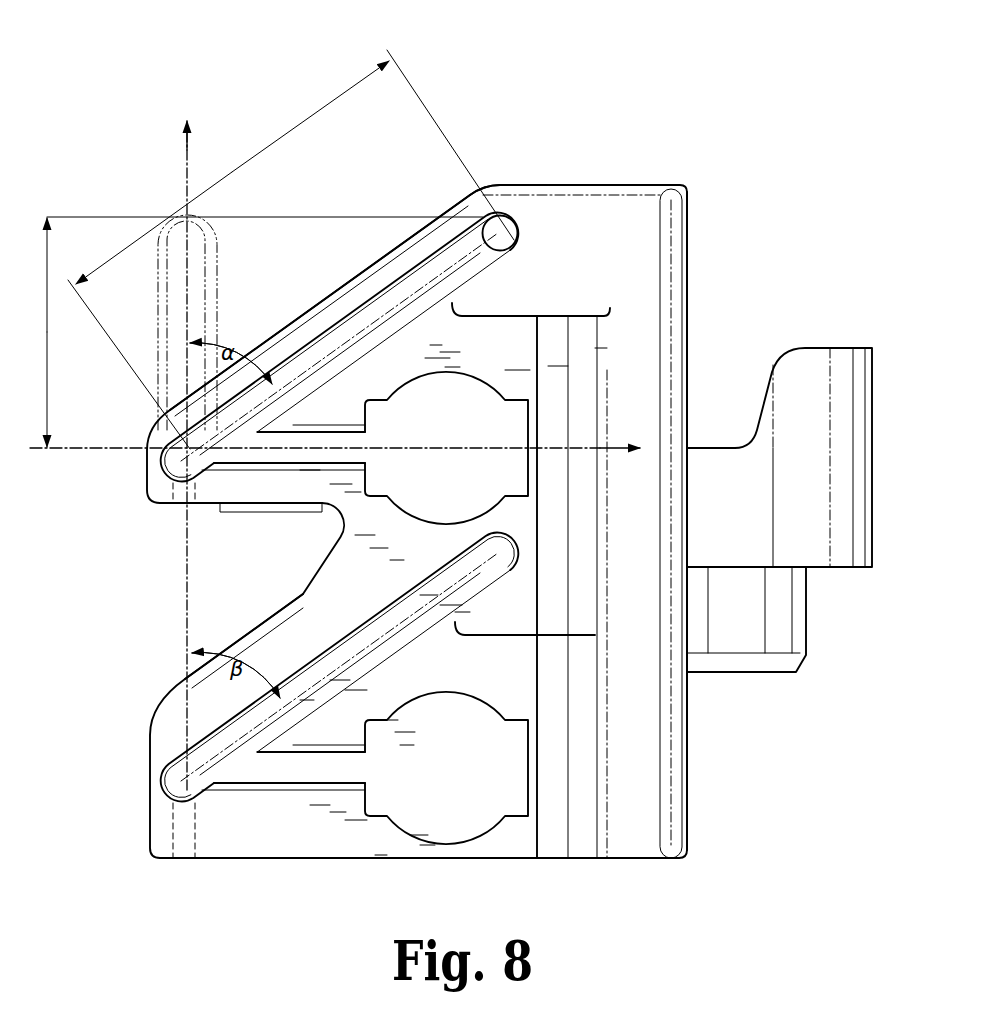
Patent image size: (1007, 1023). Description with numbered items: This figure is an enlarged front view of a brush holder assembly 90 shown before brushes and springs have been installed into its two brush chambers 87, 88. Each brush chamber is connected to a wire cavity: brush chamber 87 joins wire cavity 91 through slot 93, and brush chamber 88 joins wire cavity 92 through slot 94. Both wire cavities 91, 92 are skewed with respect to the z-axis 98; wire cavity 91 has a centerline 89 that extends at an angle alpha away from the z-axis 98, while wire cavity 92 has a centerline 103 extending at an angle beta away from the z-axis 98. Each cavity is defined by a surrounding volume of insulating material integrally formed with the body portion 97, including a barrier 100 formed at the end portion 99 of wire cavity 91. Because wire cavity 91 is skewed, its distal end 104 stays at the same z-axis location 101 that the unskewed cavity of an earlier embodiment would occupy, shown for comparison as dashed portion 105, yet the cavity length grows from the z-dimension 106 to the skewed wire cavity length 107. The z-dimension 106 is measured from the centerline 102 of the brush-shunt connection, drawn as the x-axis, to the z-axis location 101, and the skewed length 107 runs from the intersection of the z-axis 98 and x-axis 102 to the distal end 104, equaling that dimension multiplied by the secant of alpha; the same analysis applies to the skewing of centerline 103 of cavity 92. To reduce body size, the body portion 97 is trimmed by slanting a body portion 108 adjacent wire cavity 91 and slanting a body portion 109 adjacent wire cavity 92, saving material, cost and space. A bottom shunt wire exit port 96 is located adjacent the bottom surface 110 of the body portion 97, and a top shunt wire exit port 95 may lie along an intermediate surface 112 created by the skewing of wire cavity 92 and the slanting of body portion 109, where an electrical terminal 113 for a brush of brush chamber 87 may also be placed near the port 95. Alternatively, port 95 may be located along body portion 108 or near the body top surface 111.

The brush chamber 87 is at (446, 448).
The brush chamber 88 is at (446, 768).
The centerline 89 is at (528, 206).
The brush holder assembly 90 is at (722, 881).
The wire cavity 91 is at (467, 257).
The wire cavity 92 is at (472, 578).
The slot 93 is at (322, 456).
The slot 94 is at (307, 768).
The top shunt wire exit port 95 is at (168, 492).
The bottom shunt wire exit port 96 is at (168, 812).
The body portion 97 is at (660, 236).
The z-axis 98 is at (186, 158).
The end portion 99 is at (518, 232).
The barrier 100 is at (483, 213).
The z-axis location 101 is at (180, 227).
The centerline 102 is at (552, 448).
The centerline 103 is at (493, 550).
The distal end 104 is at (505, 236).
The dashed portion 105 is at (219, 248).
The z-dimension 106 is at (252, 332).
The skewed wire cavity length 107 is at (187, 207).
The body portion 108 is at (336, 290).
The body portion 109 is at (273, 616).
The bottom surface 110 is at (222, 862).
The body top surface 111 is at (627, 184).
The intermediate surface 112 is at (203, 507).
The electrical terminal 113 is at (237, 513).